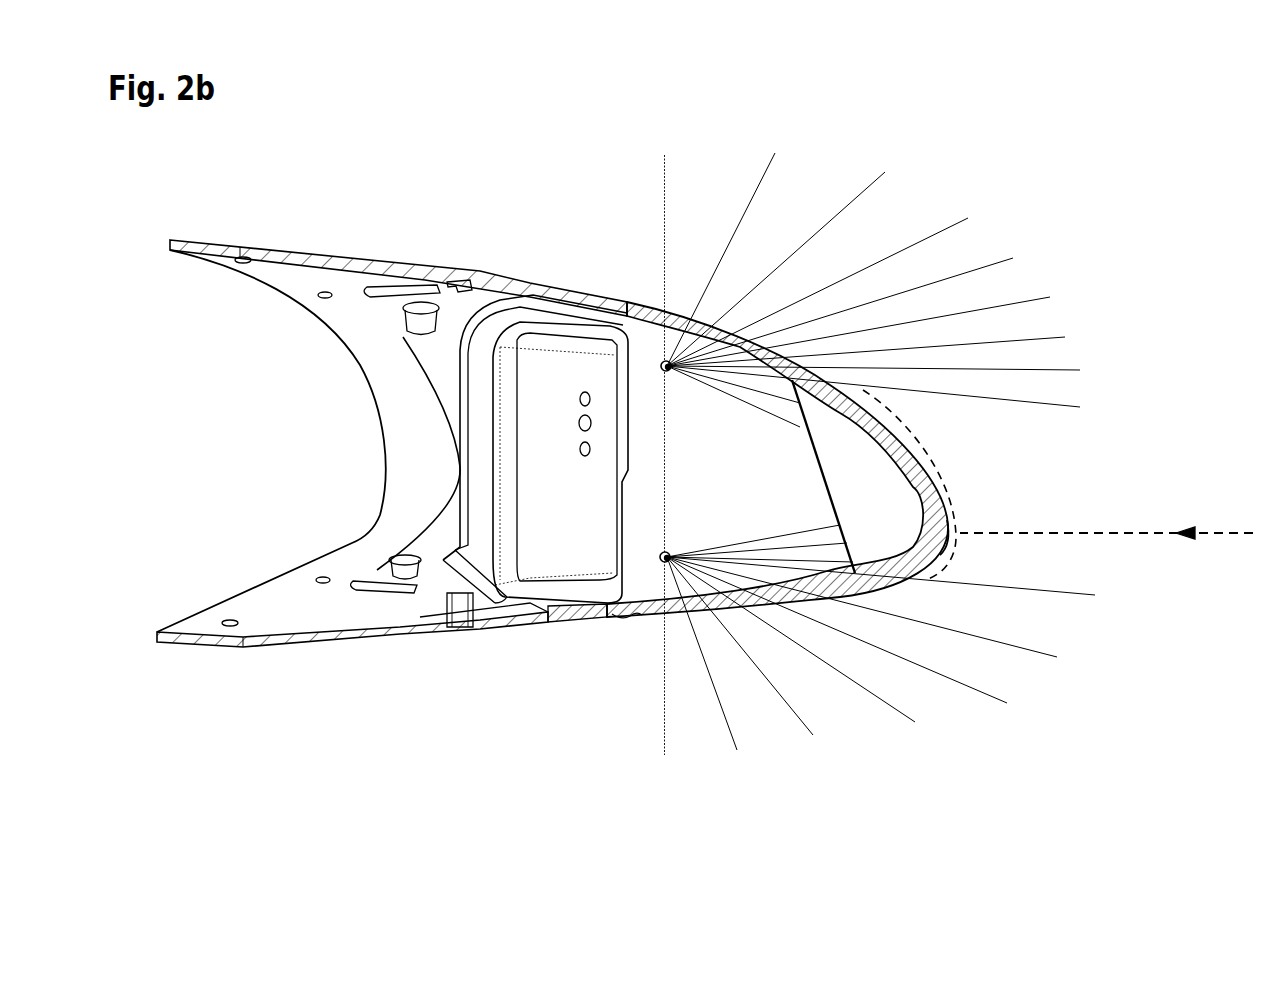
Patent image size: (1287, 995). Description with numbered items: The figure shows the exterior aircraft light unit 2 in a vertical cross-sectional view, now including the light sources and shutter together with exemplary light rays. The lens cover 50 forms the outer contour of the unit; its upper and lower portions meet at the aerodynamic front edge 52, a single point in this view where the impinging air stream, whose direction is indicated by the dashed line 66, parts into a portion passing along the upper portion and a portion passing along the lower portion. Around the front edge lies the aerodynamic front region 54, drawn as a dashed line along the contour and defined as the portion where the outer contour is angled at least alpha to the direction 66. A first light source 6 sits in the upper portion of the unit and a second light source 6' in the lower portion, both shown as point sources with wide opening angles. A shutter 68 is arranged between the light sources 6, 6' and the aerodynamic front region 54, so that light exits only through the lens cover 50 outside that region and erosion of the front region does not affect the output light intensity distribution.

The exterior aircraft light unit 2 is at (1004, 234).
The first light source 6 is at (869, 454).
The second light source 6' is at (876, 613).
The lens cover 50 is at (637, 619).
The aerodynamic front edge 52 is at (953, 534).
The aerodynamic front region 54 is at (943, 463).
The direction of the impinging air stream 66 is at (1230, 533).
The shutter 68 is at (827, 478).